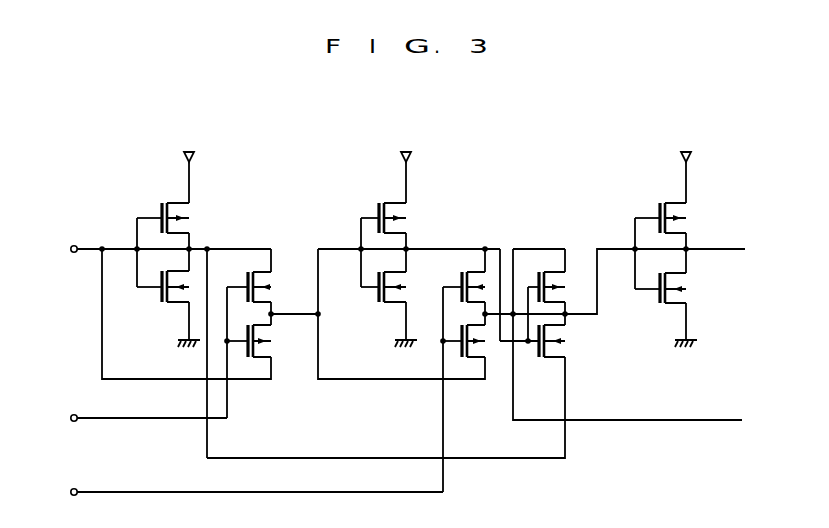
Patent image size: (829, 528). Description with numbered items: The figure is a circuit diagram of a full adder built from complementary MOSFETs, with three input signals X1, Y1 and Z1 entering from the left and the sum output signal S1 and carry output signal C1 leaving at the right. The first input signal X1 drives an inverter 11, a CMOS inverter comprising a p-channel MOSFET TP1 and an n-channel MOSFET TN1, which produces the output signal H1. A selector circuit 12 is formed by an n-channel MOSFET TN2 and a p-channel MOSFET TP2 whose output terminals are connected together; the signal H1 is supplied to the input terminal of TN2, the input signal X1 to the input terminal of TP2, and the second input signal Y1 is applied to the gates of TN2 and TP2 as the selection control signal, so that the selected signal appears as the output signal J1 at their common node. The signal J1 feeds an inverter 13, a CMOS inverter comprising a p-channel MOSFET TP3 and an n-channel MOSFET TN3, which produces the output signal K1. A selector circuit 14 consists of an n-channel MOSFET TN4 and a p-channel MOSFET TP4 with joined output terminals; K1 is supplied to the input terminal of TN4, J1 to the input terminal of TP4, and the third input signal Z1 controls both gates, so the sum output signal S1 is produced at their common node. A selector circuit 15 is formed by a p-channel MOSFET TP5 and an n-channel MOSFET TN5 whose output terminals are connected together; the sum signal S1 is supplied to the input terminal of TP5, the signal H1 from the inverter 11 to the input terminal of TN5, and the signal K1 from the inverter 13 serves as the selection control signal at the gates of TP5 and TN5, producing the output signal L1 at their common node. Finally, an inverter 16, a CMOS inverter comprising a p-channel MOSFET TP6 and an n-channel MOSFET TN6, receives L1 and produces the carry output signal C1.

The inverter 11 is at (177, 253).
The selector circuit 12 is at (215, 318).
The inverter 13 is at (406, 254).
The selector circuit 14 is at (422, 358).
The selector circuit 15 is at (421, 341).
The inverter 16 is at (688, 254).
The p-channel MOSFET TP1 is at (184, 210).
The n-channel MOSFET TN1 is at (150, 299).
The p-channel MOSFET TP2 is at (273, 345).
The n-channel MOSFET TN2 is at (276, 281).
The p-channel MOSFET TP3 is at (411, 211).
The n-channel MOSFET TN3 is at (372, 296).
The p-channel MOSFET TP4 is at (488, 348).
The n-channel MOSFET TN4 is at (491, 278).
The p-channel MOSFET TP5 is at (573, 277).
The n-channel MOSFET TN5 is at (570, 343).
The p-channel MOSFET TP6 is at (689, 209).
The n-channel MOSFET TN6 is at (691, 291).
The first input signal X1 is at (160, 249).
The second input signal Y1 is at (138, 418).
The third input signal Z1 is at (246, 493).
The sum output signal S1 is at (636, 341).
The carry output signal C1 is at (728, 251).
The output signal of inverter H1 is at (219, 343).
The output signal of selector circuit J1 is at (293, 305).
The output signal of inverter K1 is at (409, 241).
The output signal of selector circuit L1 is at (585, 281).